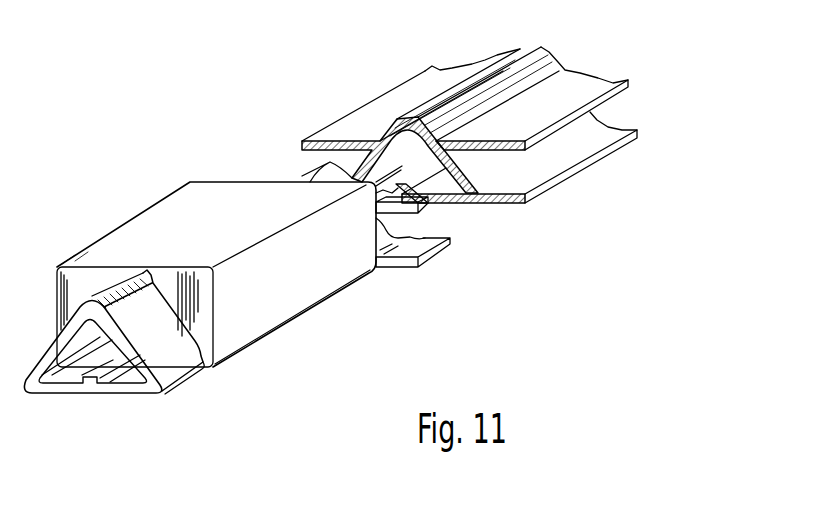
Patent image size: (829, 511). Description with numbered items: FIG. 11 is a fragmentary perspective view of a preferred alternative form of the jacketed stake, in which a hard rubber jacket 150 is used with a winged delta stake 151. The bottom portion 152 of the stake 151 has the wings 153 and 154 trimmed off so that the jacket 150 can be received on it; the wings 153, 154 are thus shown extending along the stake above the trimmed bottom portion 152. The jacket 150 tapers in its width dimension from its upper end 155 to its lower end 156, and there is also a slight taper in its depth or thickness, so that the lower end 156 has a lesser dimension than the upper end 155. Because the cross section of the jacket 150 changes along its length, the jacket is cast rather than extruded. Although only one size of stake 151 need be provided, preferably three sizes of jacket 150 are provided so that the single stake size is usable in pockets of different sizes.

The hard rubber jacket 150 is at (251, 155).
The winged delta stake 151 is at (488, 148).
The bottom portion 152 is at (172, 367).
The wing 153 is at (412, 90).
The wing 154 is at (602, 138).
The upper end 155 is at (375, 272).
The lower end 156 is at (215, 370).